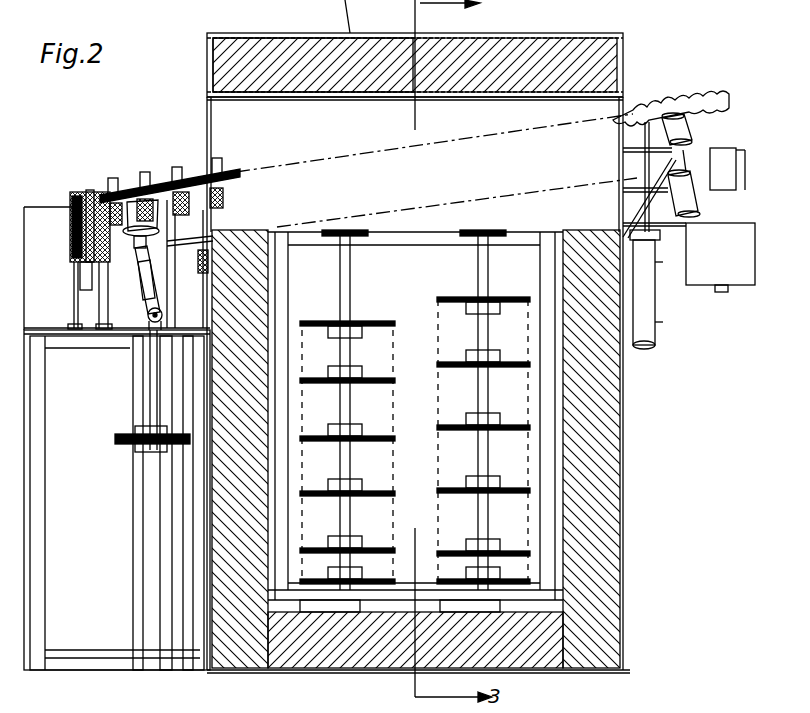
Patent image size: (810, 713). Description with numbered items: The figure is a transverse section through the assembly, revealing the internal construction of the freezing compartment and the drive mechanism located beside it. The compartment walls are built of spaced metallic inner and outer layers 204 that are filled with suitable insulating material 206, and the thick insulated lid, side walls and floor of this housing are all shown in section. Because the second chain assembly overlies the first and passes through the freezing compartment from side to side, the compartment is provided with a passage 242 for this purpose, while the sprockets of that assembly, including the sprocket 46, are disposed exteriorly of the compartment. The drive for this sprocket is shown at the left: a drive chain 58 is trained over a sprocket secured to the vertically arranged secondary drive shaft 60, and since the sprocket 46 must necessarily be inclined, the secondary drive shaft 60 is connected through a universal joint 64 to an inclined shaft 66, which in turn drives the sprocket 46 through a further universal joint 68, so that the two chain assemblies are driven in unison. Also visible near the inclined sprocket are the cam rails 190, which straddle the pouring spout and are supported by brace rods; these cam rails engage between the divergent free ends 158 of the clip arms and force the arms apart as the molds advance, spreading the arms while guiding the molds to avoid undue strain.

The sprocket 46 is at (163, 178).
The drive chain 58 is at (115, 440).
The secondary drive shaft 60 is at (152, 376).
The universal joint 64 is at (163, 307).
The inclined shaft 66 is at (148, 277).
The universal joint 68 is at (133, 247).
The divergent free ends 158 is at (418, 660).
The cam rails 190 is at (73, 260).
The inner and outer layers 204 is at (322, 97).
The insulating material 206 is at (455, 70).
The passage 242 is at (564, 100).